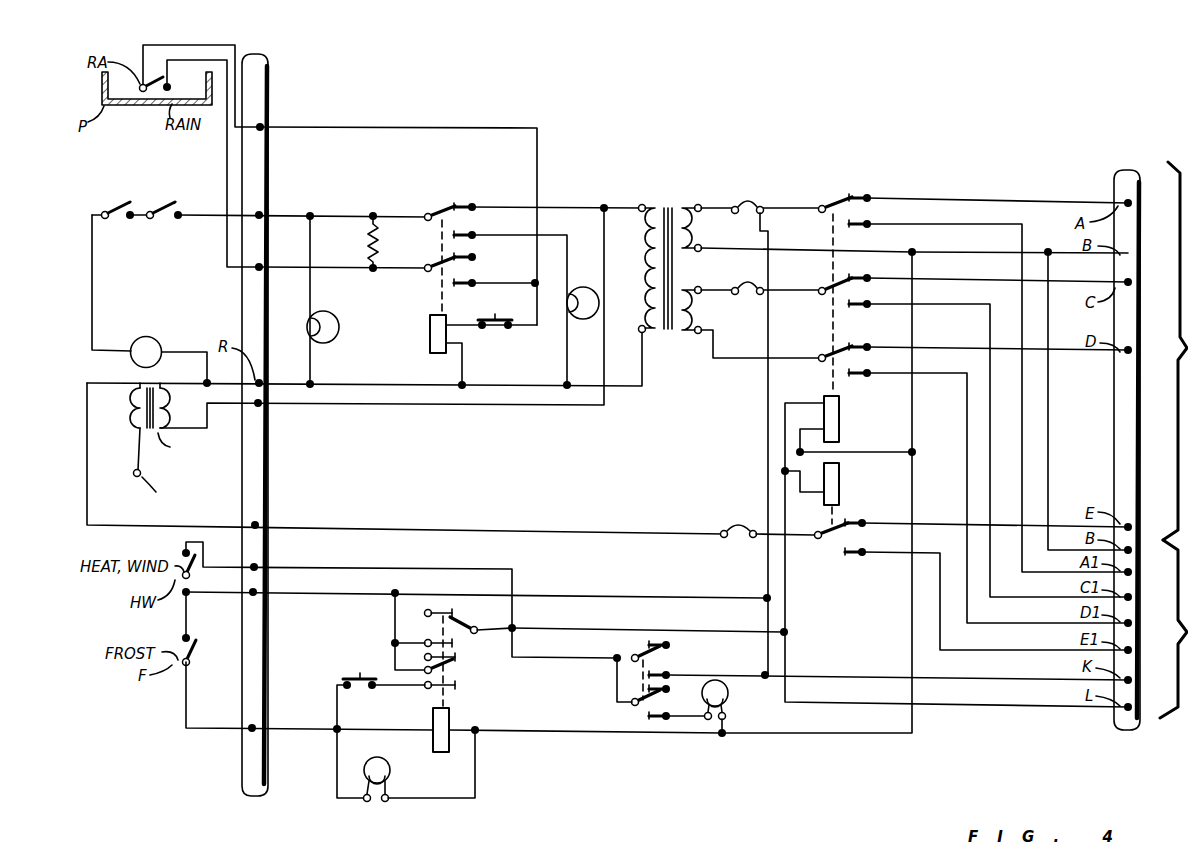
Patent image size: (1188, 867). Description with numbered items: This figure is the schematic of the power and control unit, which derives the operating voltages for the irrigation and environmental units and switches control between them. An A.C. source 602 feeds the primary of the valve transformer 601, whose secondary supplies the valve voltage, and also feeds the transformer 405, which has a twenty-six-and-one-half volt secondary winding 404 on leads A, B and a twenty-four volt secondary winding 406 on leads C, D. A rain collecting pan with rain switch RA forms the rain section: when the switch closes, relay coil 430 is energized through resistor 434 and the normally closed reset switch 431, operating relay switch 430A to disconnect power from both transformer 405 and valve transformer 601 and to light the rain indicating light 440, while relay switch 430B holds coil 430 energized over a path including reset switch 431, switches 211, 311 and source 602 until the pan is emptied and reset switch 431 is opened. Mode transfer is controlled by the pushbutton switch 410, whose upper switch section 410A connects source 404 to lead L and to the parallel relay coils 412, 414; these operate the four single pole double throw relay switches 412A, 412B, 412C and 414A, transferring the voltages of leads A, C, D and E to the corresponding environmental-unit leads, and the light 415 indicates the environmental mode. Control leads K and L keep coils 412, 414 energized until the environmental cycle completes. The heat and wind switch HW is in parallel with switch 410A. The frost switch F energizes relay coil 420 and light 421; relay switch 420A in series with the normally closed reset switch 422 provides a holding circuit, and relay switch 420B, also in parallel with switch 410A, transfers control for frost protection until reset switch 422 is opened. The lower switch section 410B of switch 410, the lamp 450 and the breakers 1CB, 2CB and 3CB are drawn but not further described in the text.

The switch 211 is at (122, 208).
The switch 311 is at (185, 208).
The A.C. source 602 is at (158, 340).
The valve transformer 601 is at (145, 380).
The resistor 434 is at (368, 245).
The relay switch 430A is at (440, 208).
The relay switch 430B is at (465, 280).
The relay coil 430 is at (428, 340).
The reset switch 431 is at (505, 332).
The indicator lamp 450 is at (338, 317).
The rain indicating light 440 is at (598, 300).
The transformer 405 is at (676, 266).
The secondary winding 404 is at (688, 205).
The secondary winding 406 is at (694, 334).
The circuit breaker 2CB is at (750, 200).
The circuit breaker 3CB is at (746, 284).
The circuit breaker 1CB is at (755, 510).
The relay switch 412A is at (875, 200).
The relay switch 412B is at (880, 290).
The relay switch 412C is at (870, 356).
The relay coil 412 is at (840, 430).
The relay coil 414 is at (840, 492).
The relay switch 414A is at (826, 545).
The upper switch section 410A is at (634, 648).
The relay contact 410B is at (648, 702).
The pushbutton switch 410 is at (663, 694).
The light 415 is at (730, 700).
The relay switch 420A is at (452, 674).
The relay switch 420B is at (478, 632).
The relay coil 420 is at (452, 720).
The light 421 is at (392, 768).
The reset switch 422 is at (360, 688).